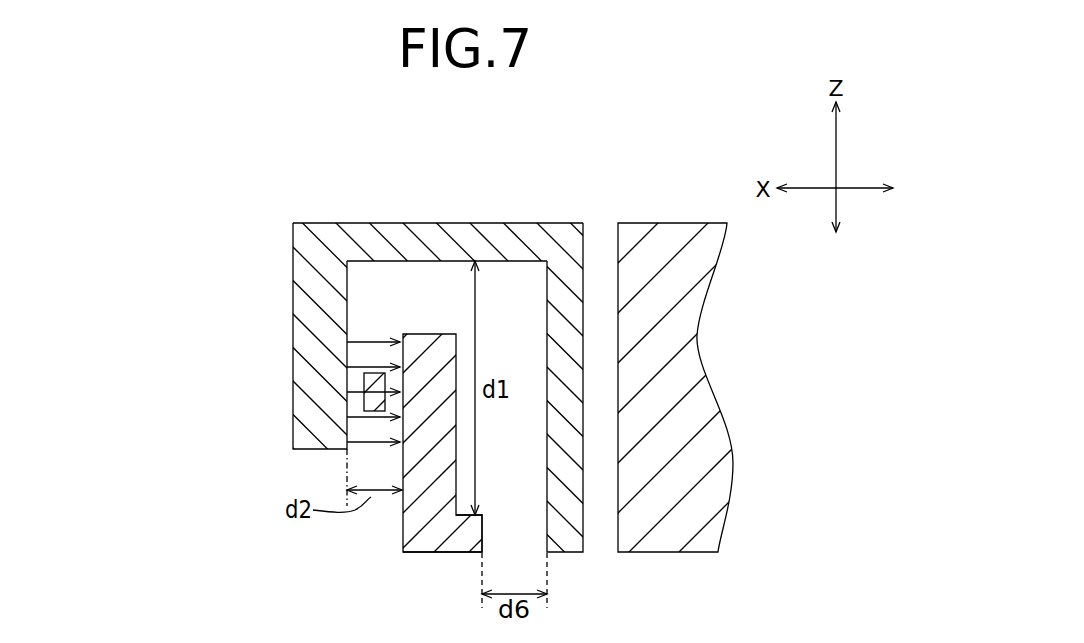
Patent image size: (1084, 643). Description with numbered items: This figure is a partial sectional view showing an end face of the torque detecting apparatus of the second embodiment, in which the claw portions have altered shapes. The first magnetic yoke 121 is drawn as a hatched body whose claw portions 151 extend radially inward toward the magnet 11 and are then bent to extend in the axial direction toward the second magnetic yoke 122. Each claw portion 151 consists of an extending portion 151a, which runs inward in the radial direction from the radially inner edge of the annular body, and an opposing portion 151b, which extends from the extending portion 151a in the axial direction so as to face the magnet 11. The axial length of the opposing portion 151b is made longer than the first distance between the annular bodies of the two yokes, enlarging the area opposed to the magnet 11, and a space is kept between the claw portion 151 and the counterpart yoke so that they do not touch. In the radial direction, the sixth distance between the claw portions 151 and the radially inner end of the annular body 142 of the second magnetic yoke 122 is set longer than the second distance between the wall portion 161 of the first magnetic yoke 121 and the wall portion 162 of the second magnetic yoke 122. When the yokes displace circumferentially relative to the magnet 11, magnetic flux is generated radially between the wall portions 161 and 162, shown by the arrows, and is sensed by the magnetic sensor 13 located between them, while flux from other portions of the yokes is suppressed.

The magnet 11 is at (677, 228).
The magnetic sensor 13 is at (376, 411).
The first magnetic yoke 121 is at (390, 223).
The second magnetic yoke 122 is at (432, 537).
The annular body 142 is at (465, 538).
The claw portion 151 is at (450, 321).
The extending portion 151a is at (493, 223).
The opposing portion 151b is at (580, 284).
The wall portion 161 is at (297, 302).
The wall portion 162 is at (408, 498).